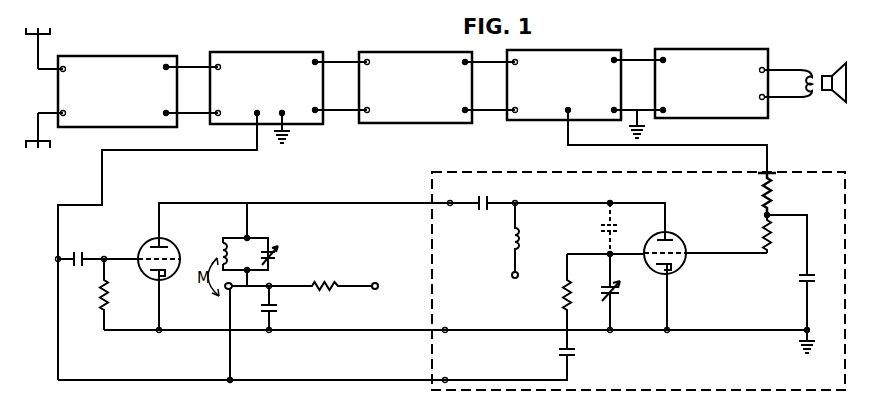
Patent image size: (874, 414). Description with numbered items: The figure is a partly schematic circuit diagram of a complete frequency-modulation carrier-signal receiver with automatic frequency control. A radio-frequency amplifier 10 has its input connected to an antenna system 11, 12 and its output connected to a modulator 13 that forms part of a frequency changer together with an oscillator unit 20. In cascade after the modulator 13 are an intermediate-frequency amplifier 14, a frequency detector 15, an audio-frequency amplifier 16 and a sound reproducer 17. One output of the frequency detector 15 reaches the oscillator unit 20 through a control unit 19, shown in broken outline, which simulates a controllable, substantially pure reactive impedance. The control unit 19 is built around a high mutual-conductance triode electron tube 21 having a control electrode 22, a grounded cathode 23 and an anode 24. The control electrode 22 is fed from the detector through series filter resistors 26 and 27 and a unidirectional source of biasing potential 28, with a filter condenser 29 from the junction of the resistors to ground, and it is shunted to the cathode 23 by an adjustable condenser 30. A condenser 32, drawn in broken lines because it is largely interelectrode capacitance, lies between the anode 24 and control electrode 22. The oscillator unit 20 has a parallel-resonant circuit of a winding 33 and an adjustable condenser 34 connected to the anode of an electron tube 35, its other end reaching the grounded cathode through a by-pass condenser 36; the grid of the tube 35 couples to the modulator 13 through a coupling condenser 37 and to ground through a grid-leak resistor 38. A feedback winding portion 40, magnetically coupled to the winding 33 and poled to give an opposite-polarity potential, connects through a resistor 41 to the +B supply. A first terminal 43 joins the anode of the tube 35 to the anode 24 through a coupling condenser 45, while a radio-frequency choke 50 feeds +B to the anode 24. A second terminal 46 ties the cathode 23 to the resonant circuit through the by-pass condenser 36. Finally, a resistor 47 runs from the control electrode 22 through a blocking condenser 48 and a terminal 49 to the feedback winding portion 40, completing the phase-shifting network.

The radio-frequency amplifier 10 is at (137, 56).
The antenna system 11 is at (38, 52).
The antenna system 12 is at (38, 127).
The modulator 13 is at (258, 52).
The intermediate-frequency amplifier 14 is at (407, 52).
The frequency detector 15 is at (556, 50).
The audio-frequency amplifier 16 is at (703, 49).
The sound reproducer 17 is at (815, 73).
The control unit 19 is at (484, 172).
The oscillator unit 20 is at (222, 197).
The electron tube 21 is at (680, 245).
The control electrode 22 is at (680, 262).
The cathode 23 is at (655, 302).
The anode 24 is at (666, 240).
The filter resistor 26 is at (771, 240).
The filter resistor 27 is at (769, 212).
The unidirectional source of biasing potential 28 is at (776, 183).
The filter condenser 29 is at (797, 283).
The adjustable condenser 30 is at (604, 296).
The condenser 32 is at (604, 228).
The winding 33 is at (222, 250).
The adjustable condenser 34 is at (278, 254).
The electron tube 35 is at (152, 243).
The by-pass condenser 36 is at (272, 311).
The coupling condenser 37 is at (78, 258).
The grid-leak resistor 38 is at (102, 300).
The feedback winding portion 40 is at (227, 292).
The resistor 41 is at (321, 290).
The first terminal 43 is at (450, 201).
The coupling condenser 45 is at (479, 194).
The second terminal 46 is at (445, 328).
The resistor 47 is at (565, 305).
The blocking condenser 48 is at (558, 354).
The terminal 49 is at (446, 378).
The radio-frequency choke 50 is at (511, 232).